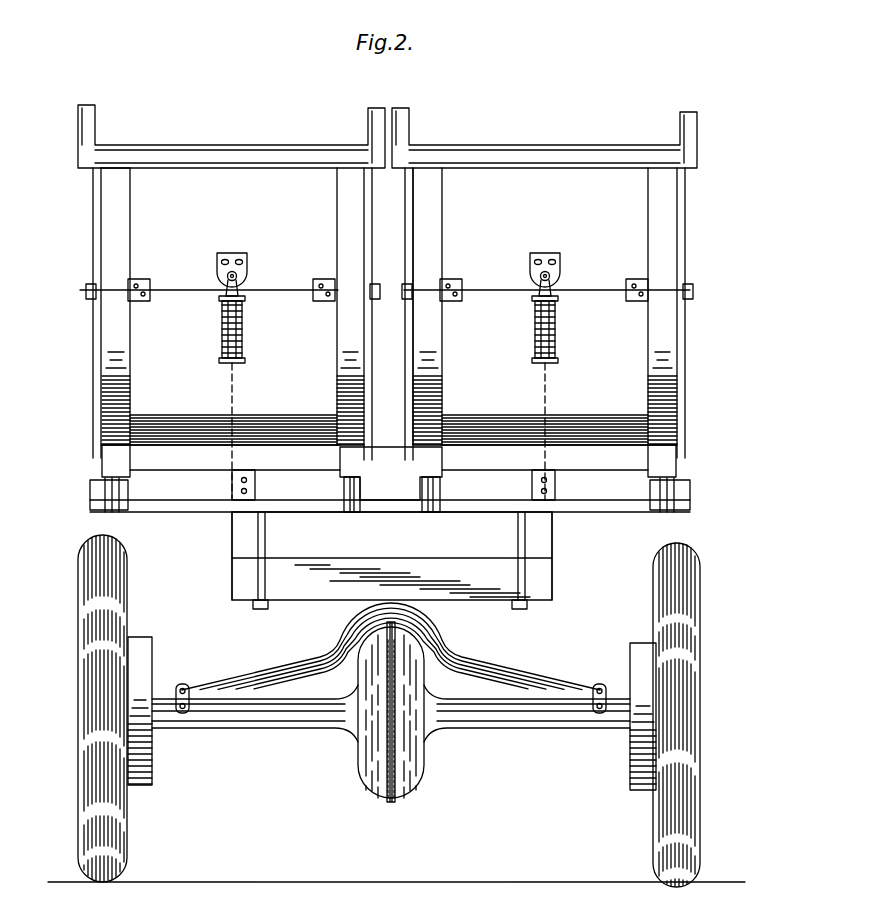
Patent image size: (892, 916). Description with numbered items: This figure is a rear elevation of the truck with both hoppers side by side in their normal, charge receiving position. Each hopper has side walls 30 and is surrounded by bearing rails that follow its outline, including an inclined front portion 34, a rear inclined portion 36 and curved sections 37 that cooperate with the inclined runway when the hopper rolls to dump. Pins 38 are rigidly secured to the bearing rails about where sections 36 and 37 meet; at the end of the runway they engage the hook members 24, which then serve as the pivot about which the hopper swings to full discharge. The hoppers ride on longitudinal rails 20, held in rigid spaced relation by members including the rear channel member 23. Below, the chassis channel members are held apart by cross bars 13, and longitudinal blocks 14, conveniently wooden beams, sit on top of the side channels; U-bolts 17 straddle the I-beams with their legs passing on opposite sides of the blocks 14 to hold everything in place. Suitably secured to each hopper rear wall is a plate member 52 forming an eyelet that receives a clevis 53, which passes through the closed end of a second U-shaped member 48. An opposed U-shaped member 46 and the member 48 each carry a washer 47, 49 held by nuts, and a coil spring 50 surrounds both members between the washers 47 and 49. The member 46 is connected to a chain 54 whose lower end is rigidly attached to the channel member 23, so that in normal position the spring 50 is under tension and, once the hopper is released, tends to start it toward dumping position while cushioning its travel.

The cross bars 13 is at (540, 580).
The longitudinal extending blocks 14 is at (238, 538).
The U-bolts 17 is at (261, 556).
The rails 20 is at (120, 463).
The rear channel member 23 is at (280, 482).
The hook members 24 is at (100, 504).
The side walls 30 is at (246, 172).
The inclined front portion 34 is at (97, 191).
The rear inclined portion 36 is at (112, 222).
The curved sections 37 is at (104, 403).
The pins 38 is at (110, 292).
The U-shaped member 46 is at (243, 330).
The washer 47 is at (219, 298).
The second U-shaped member 48 is at (244, 303).
The washer 49 is at (220, 354).
The coil spring 50 is at (221, 323).
The plate member 52 is at (236, 255).
The clevis 53 is at (238, 279).
The chain 54 is at (236, 402).